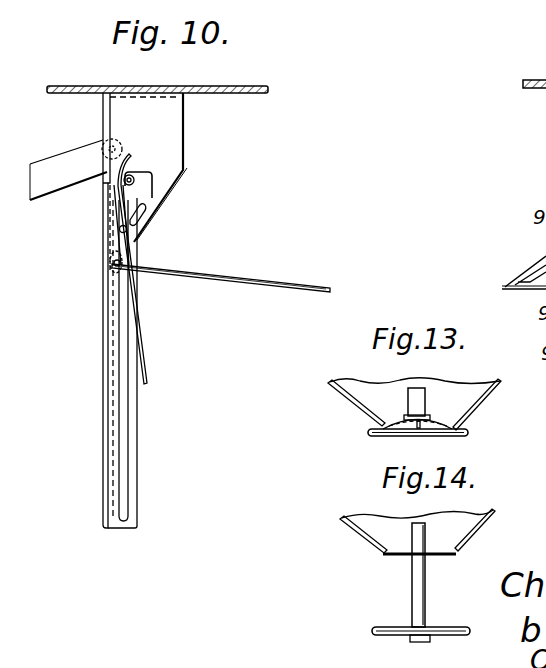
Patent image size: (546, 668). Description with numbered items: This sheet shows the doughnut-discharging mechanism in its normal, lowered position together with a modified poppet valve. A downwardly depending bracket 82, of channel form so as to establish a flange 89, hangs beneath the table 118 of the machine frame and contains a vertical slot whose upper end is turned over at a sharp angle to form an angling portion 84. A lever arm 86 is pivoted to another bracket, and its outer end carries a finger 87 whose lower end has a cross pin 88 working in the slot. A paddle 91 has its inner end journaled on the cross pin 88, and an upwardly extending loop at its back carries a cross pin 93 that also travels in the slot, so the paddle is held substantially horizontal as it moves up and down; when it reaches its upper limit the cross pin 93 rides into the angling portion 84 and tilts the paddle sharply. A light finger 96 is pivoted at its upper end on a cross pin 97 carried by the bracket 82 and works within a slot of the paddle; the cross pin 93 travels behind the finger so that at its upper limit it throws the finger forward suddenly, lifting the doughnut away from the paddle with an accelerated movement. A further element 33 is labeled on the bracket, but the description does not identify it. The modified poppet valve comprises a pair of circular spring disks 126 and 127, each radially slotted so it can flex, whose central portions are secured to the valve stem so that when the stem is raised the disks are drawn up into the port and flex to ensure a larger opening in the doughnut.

In FIG. 10, the table 118 is at (230, 86).
In FIG. 10, the lever arm 86 is at (61, 162).
In FIG. 10, the finger 87 is at (108, 197).
In FIG. 10, the cross pin 97 is at (136, 179).
In FIG. 10, the angling portion of the slot 84 is at (140, 216).
In FIG. 10, the cross pin 93 is at (119, 229).
In FIG. 10, the cross pin 88 is at (112, 264).
In FIG. 10, the bracket 82 is at (106, 327).
In FIG. 10, the paddle 91 is at (236, 290).
In FIG. 10, the light finger 96 is at (146, 338).
In FIG. 10, the slide rod 33 is at (120, 378).
In FIG. 10, the flange 89 is at (133, 461).
In FIG. 13, the spring disk 126 is at (460, 426).
In FIG. 14, the spring disk 126 is at (388, 627).
In FIG. 13, the spring disk 127 is at (464, 437).
In FIG. 14, the spring disk 127 is at (376, 639).